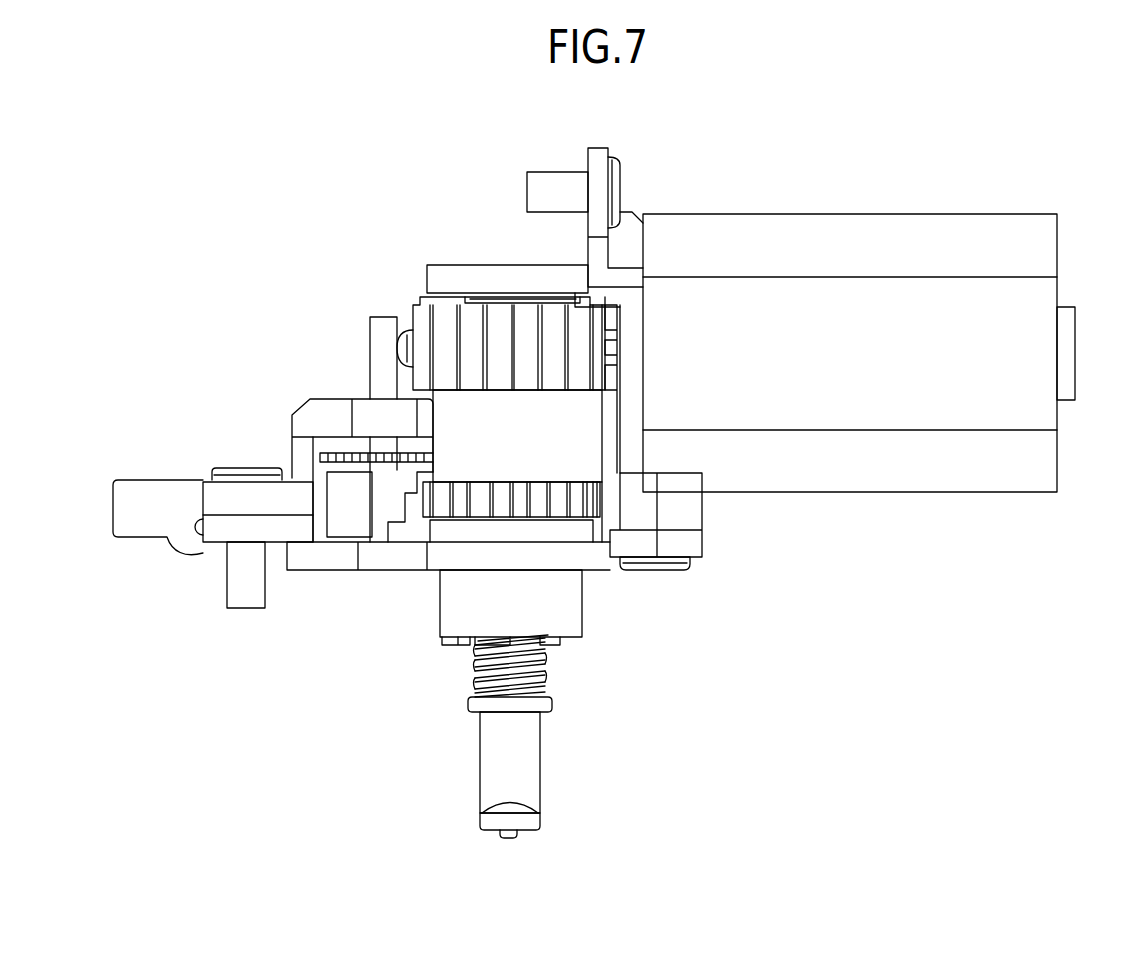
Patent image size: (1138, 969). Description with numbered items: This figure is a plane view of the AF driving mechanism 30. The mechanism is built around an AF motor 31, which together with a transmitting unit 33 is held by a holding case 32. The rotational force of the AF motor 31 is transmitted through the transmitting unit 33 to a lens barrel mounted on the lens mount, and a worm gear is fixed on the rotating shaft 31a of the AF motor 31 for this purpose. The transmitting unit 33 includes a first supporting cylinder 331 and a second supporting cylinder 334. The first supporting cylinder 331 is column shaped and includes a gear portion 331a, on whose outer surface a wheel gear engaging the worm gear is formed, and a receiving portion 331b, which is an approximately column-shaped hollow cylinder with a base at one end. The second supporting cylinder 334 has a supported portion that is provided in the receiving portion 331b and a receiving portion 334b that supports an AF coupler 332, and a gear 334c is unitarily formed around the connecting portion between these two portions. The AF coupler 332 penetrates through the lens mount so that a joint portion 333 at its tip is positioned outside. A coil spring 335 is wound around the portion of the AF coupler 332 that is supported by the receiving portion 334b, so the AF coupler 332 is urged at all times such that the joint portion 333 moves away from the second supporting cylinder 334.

The AF driving mechanism 30 is at (865, 114).
The AF motor 31 is at (878, 465).
The rotating shaft 31a is at (614, 350).
The holding case 32 is at (313, 572).
The transmitting unit 33 is at (290, 238).
The first supporting cylinder 331 is at (398, 297).
The gear portion 331a is at (480, 322).
The receiving portion 331b is at (458, 423).
The AF coupler 332 is at (541, 752).
The joint portion 333 is at (527, 833).
The second supporting cylinder 334 is at (403, 602).
The receiving portion 334b is at (582, 610).
The gear 334c is at (487, 502).
The coil spring 335 is at (548, 662).